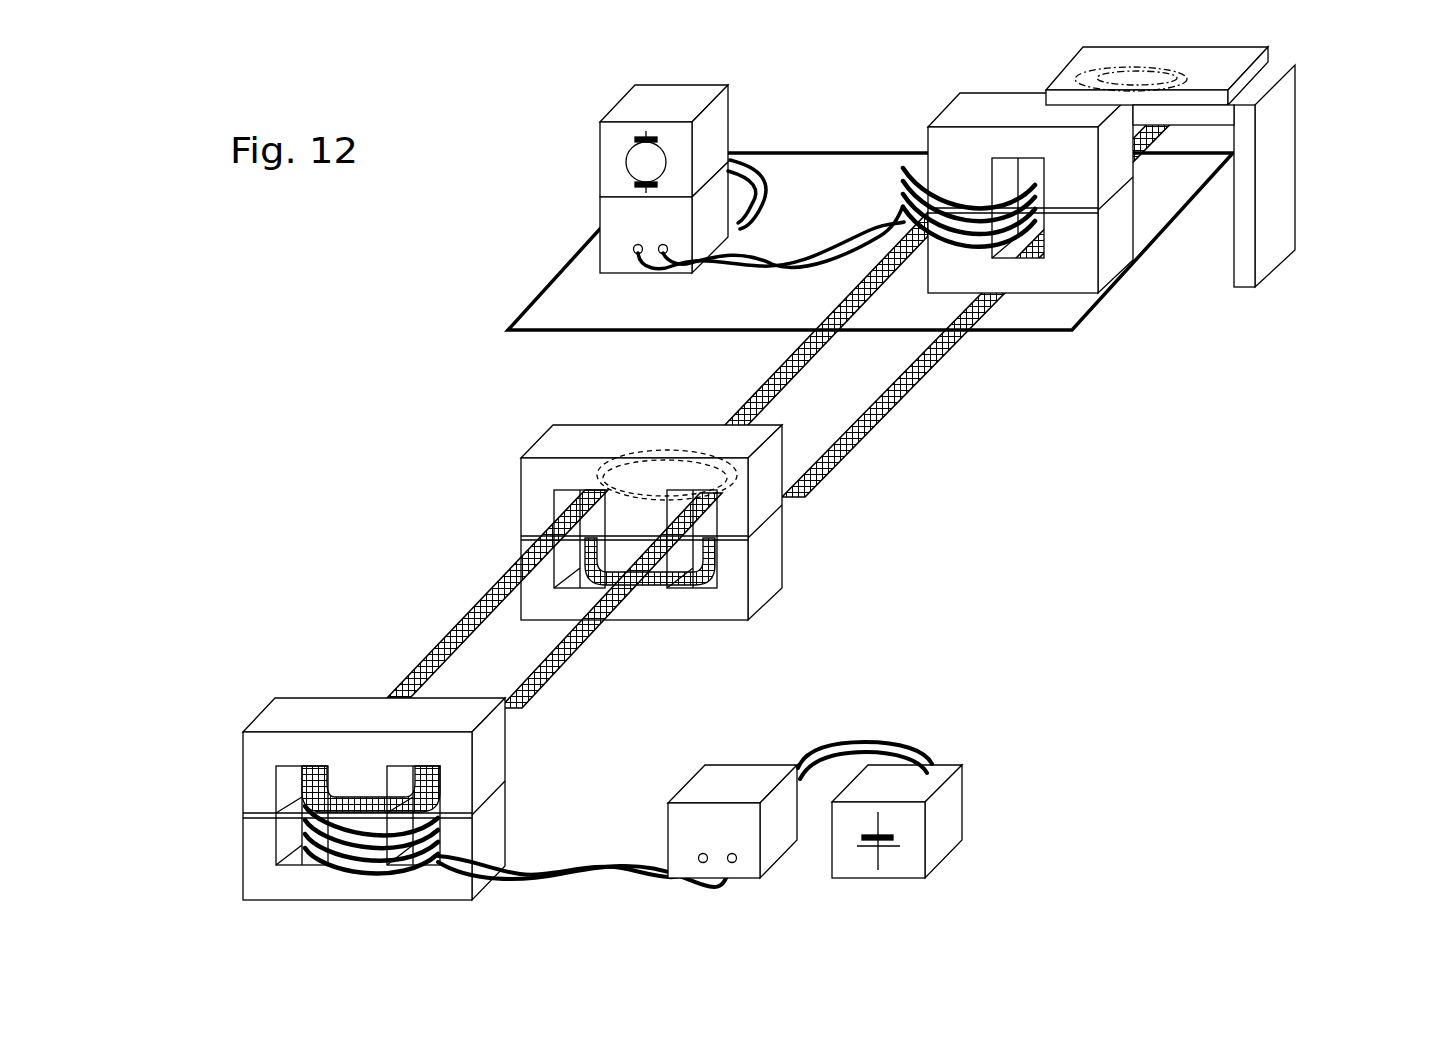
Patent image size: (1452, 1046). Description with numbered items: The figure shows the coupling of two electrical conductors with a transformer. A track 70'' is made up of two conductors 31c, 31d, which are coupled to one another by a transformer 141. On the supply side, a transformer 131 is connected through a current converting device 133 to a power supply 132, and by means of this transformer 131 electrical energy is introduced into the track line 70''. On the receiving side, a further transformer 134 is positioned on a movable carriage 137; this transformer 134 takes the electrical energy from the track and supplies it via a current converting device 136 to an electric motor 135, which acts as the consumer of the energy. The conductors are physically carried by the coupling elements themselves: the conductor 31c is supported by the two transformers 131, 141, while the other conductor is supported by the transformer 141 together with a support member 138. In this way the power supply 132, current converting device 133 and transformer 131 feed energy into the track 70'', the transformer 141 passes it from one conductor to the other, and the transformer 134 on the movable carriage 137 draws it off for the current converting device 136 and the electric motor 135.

The track 70'' is at (291, 638).
The transformer 131 is at (507, 742).
The power supply 132 is at (935, 765).
The current converting device 133 is at (736, 765).
The transformer 134 is at (1133, 220).
The electric motor 135 is at (710, 86).
The current converting device 136 is at (598, 240).
The movable carriage 137 is at (1100, 308).
The support member 138 is at (1297, 92).
The transformer 141 is at (785, 545).
The conductor 31c is at (537, 688).
The conductor 31d is at (911, 386).